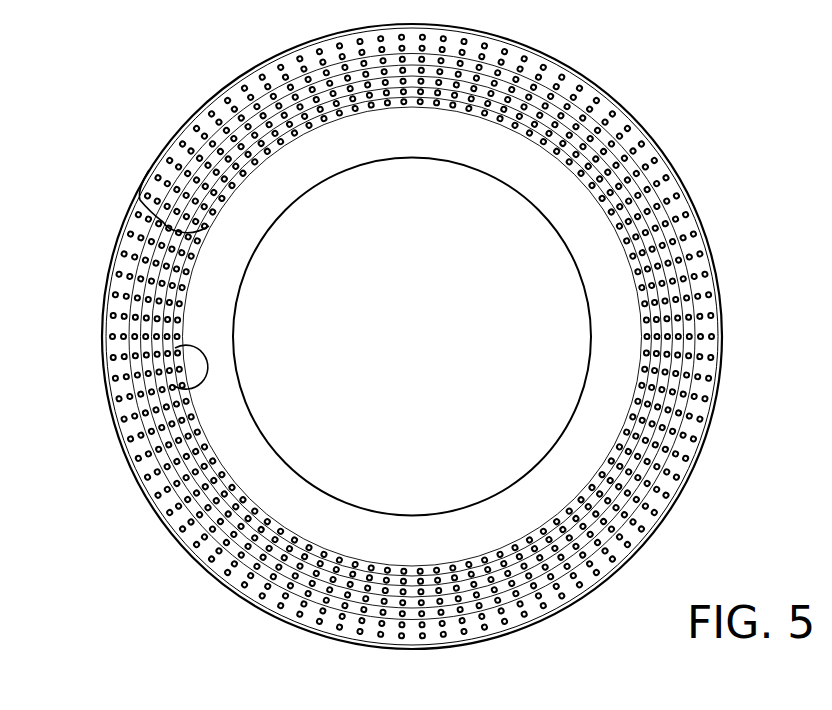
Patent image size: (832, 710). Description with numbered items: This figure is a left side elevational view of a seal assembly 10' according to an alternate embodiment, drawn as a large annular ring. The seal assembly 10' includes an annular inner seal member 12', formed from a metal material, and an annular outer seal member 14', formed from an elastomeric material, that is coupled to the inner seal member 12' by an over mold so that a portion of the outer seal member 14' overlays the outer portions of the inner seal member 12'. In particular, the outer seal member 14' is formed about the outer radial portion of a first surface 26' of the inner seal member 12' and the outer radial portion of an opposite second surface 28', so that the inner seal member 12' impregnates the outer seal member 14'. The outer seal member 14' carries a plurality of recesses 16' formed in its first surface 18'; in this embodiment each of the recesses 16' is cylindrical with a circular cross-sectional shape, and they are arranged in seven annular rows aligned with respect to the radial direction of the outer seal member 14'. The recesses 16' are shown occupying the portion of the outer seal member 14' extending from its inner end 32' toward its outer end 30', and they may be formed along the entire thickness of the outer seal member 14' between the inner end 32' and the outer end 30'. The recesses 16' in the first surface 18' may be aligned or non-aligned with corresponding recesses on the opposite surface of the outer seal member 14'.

The seal assembly 10' is at (387, 351).
The inner seal member 12' is at (412, 363).
The outer seal member 14' is at (353, 336).
The recesses 16' is at (412, 337).
The first surface 18' is at (412, 356).
The first surface 26' is at (412, 336).
The second surface 28' is at (412, 337).
The outer end 30' is at (412, 363).
The inner end 32' is at (116, 363).